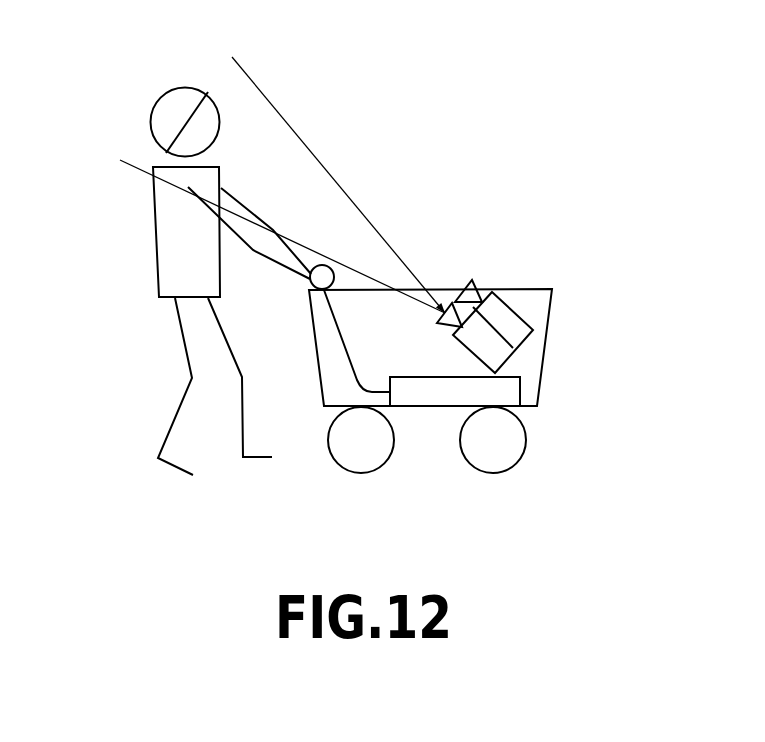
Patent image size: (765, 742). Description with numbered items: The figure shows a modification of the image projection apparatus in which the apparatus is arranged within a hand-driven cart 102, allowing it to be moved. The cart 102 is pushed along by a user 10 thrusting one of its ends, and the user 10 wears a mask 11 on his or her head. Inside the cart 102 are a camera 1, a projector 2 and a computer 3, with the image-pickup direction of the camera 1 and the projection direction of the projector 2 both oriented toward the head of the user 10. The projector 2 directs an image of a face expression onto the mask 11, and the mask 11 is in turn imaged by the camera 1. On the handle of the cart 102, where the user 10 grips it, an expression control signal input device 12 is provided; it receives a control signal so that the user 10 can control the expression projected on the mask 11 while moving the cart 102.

The user 10 is at (130, 120).
The mask 11 is at (215, 112).
The expression control signal input device 12 is at (310, 283).
The hand-driven cart 102 is at (547, 333).
The computer 3 is at (403, 388).
The camera 1 is at (505, 310).
The projector 2 is at (473, 343).